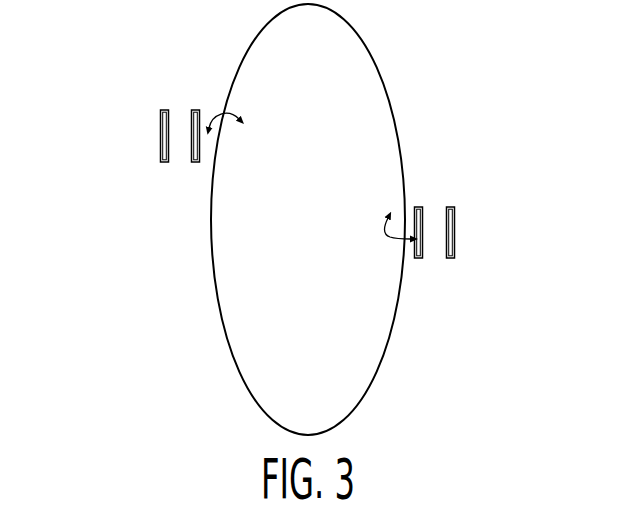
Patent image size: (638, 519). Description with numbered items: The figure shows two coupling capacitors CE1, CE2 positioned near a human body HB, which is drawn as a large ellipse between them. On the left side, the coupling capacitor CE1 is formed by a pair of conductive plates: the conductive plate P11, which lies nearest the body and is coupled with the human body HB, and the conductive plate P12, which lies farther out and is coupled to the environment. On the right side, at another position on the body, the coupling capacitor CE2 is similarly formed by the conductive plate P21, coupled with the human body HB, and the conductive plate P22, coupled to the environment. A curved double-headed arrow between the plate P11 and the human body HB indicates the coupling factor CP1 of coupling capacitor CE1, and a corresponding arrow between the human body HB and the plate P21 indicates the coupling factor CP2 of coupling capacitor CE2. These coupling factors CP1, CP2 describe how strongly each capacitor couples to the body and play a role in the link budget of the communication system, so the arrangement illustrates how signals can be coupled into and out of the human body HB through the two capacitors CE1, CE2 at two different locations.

The human body HB is at (308, 219).
The coupling capacitor CE1 is at (135, 107).
The conductive plate P11 is at (195, 106).
The conductive plate P12 is at (159, 115).
The coupling factor CP1 is at (243, 130).
The coupling capacitor CE2 is at (469, 187).
The conductive plate P21 is at (423, 203).
The conductive plate P22 is at (455, 202).
The coupling factor CP2 is at (378, 240).